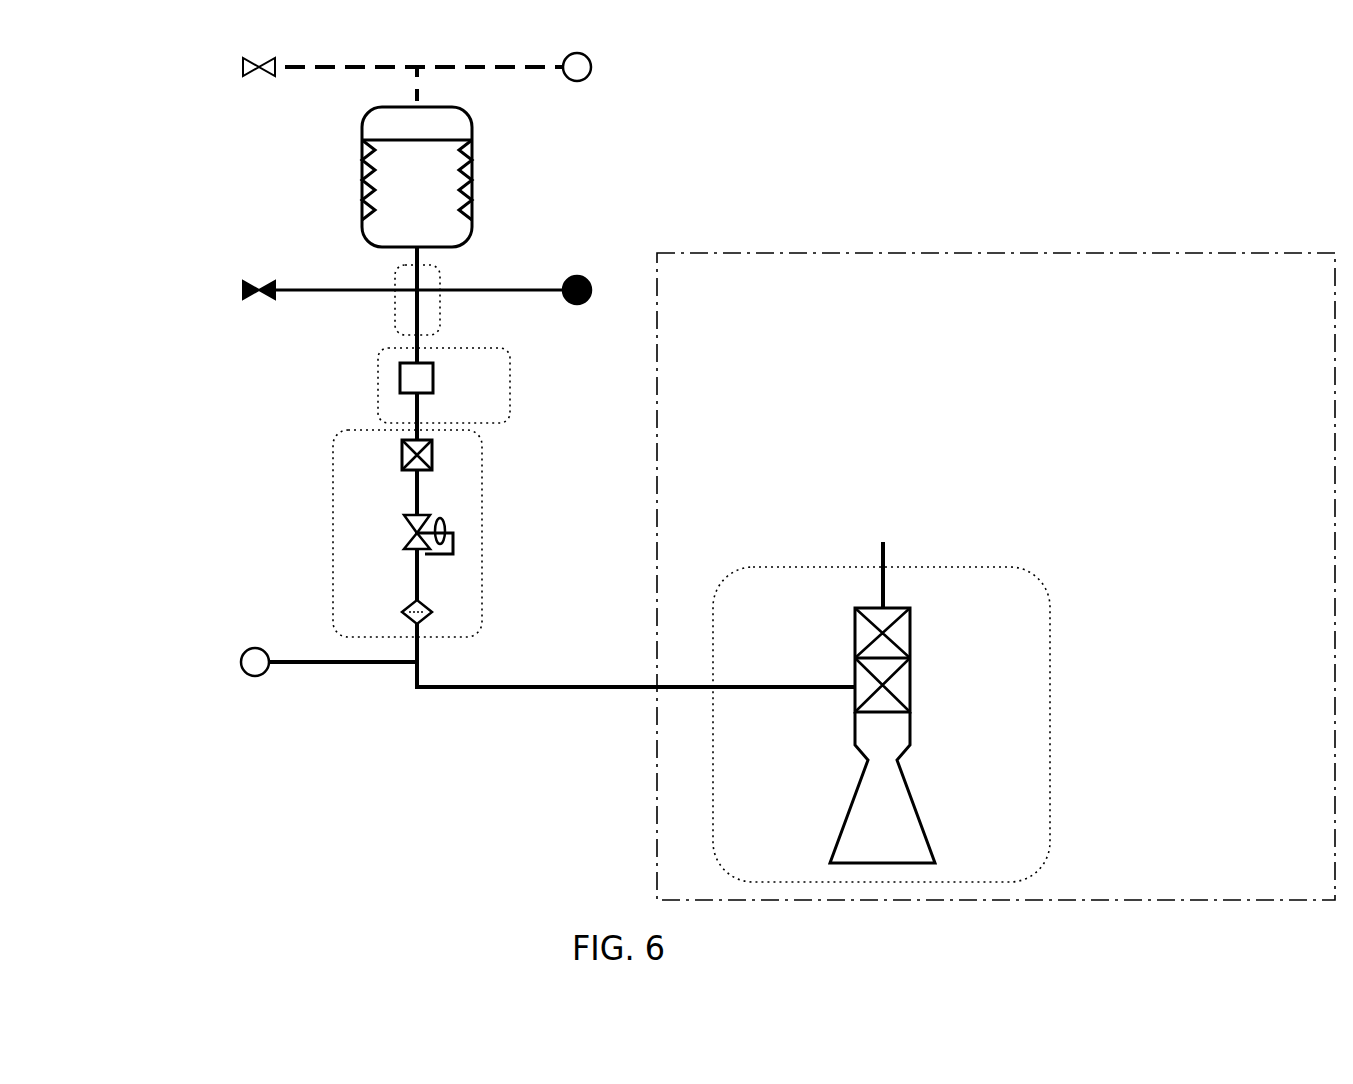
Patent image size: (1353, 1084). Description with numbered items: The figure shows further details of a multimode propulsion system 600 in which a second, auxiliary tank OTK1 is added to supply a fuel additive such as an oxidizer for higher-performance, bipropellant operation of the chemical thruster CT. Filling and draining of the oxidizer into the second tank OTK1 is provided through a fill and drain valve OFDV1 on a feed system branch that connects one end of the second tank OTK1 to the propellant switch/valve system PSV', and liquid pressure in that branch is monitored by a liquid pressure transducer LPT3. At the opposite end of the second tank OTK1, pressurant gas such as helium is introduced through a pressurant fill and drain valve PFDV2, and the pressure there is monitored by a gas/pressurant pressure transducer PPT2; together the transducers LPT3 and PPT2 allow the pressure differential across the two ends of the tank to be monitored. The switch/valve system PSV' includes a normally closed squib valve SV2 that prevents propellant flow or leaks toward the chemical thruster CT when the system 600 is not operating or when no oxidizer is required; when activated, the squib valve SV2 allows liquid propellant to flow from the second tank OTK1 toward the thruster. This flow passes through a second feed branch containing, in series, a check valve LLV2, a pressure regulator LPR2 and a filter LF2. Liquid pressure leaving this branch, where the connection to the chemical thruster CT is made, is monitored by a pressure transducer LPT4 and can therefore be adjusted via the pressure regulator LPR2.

The multimode propulsion system 600 is at (112, 67).
The pressurant fill and drain valve PFDV2 is at (366, 84).
The gas/pressurant pressure transducer PPT2 is at (604, 82).
The second tank OTK1 is at (452, 177).
The fill and drain valve OFDV1 is at (381, 276).
The liquid pressure transducer LPT3 is at (599, 273).
The propellant switch/valve system PSV' is at (416, 385).
The squib valve SV2 is at (442, 381).
The check valve LLV2 is at (386, 455).
The pressure regulator LPR2 is at (398, 534).
The filter LF2 is at (392, 612).
The pressure monitoring gauge/transducer LPT4 is at (307, 649).
The chemical thruster CT is at (881, 712).